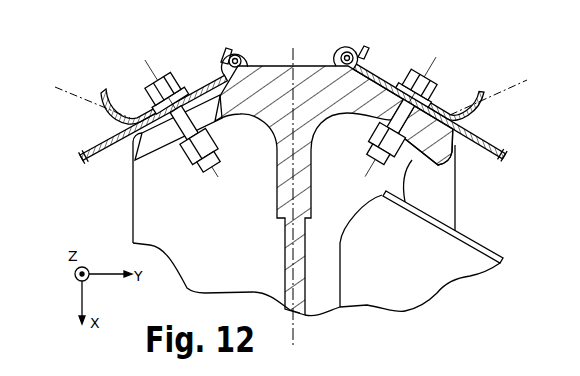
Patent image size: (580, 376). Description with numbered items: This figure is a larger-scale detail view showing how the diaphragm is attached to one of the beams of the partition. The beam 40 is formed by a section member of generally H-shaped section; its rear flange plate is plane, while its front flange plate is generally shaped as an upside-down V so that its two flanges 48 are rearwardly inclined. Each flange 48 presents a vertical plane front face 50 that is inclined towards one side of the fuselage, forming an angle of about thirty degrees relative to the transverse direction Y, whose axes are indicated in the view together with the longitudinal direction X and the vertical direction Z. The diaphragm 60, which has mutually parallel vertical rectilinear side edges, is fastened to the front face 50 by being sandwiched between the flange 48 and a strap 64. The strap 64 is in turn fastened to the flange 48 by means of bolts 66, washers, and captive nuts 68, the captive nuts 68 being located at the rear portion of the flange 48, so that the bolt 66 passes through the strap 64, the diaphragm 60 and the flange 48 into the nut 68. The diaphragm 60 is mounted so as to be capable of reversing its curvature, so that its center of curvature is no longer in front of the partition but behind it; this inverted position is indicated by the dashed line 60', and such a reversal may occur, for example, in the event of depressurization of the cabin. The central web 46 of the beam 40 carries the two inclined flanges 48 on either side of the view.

The beam 40 is at (300, 268).
The central block 46 is at (305, 87).
The flange 48 is at (219, 106).
The front face 50 is at (176, 77).
The diaphragm 60 is at (313, 129).
The dashed line 60' is at (291, 77).
The strap 64 is at (109, 100).
The bolt 66 is at (403, 85).
The captive nut 68 is at (410, 168).